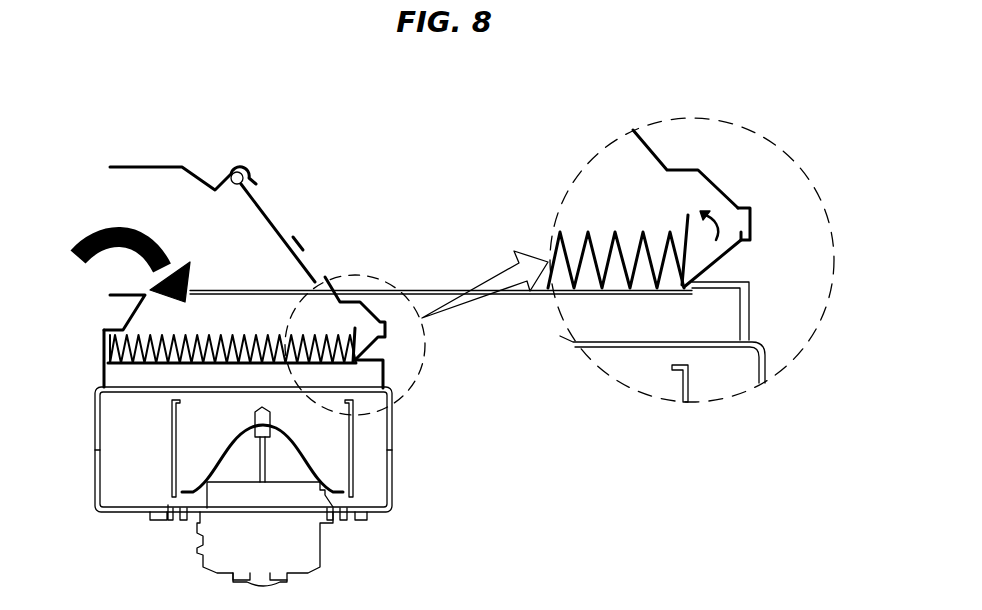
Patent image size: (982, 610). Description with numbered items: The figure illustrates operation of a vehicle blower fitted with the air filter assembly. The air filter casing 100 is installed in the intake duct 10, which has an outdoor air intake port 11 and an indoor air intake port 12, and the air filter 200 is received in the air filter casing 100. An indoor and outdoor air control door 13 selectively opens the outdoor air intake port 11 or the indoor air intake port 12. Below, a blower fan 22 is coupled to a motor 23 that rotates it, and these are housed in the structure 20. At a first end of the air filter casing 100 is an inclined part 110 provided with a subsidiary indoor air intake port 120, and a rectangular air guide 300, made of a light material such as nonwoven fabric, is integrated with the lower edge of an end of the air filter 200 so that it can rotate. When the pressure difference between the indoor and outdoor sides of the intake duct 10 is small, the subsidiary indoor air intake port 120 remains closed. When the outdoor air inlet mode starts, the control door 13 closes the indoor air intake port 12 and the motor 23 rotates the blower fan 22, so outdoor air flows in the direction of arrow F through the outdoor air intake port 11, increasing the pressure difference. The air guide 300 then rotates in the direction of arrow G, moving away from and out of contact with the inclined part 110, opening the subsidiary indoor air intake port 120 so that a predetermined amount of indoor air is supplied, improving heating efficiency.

The intake duct 10 is at (200, 176).
The outdoor air intake port 11 is at (107, 278).
The indoor air intake port 12 is at (278, 210).
The indoor and outdoor air control door 13 is at (257, 197).
The cover housing 20 is at (97, 478).
The blower fan 22 is at (352, 468).
The motor 23 is at (310, 552).
The air filter casing 100 is at (117, 366).
The inclined part 110 is at (740, 290).
The subsidiary indoor air intake port 120 is at (712, 252).
The air filter 200 is at (110, 352).
The air guide 300 is at (388, 340).
The arrow F is at (97, 233).
The arrow G is at (712, 210).